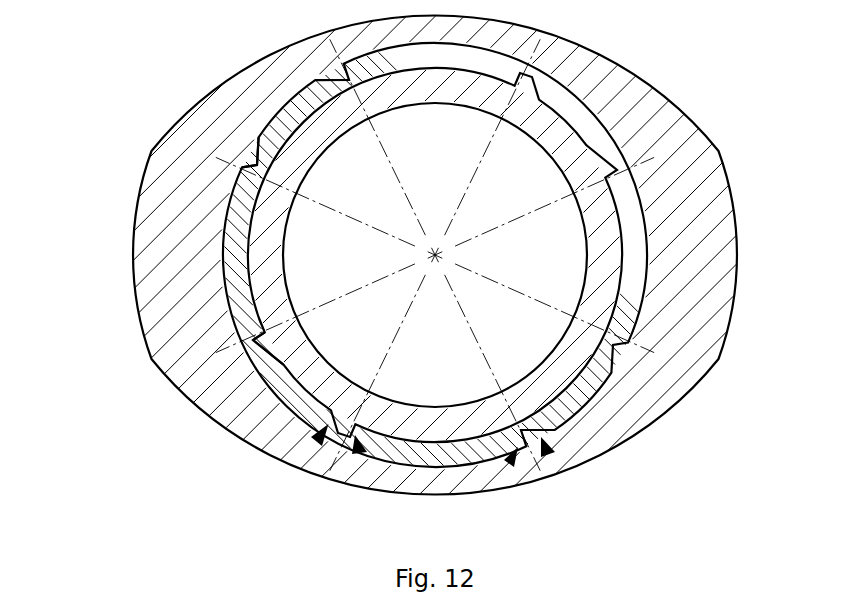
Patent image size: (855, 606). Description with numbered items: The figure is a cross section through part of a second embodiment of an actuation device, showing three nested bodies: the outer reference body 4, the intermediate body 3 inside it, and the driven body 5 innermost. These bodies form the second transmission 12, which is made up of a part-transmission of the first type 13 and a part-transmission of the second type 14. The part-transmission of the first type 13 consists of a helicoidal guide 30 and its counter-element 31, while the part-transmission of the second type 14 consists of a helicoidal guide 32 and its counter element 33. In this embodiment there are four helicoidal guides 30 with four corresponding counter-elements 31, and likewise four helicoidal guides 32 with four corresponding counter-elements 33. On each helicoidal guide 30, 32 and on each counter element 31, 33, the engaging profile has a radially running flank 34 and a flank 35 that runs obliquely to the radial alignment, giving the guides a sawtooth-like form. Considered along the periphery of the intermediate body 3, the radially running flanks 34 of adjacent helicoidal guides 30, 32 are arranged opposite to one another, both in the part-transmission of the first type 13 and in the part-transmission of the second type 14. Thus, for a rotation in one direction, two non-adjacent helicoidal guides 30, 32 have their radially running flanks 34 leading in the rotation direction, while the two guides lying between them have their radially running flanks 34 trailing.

The second transmission 12 is at (427, 276).
The part-transmission of the first type 13 is at (189, 100).
The part-transmission of the second type 14 is at (166, 411).
The helicoidal guide 30 is at (252, 160).
The counter-element 31 is at (246, 163).
The helicoidal guide 32 is at (254, 347).
The counter element 33 is at (262, 362).
The radially running flank 34 is at (435, 486).
The flank running obliquely to a radial alignment 35 is at (318, 434).
The intermediate body 3 is at (634, 218).
The reference body 4 is at (697, 285).
The driven body 5 is at (570, 142).